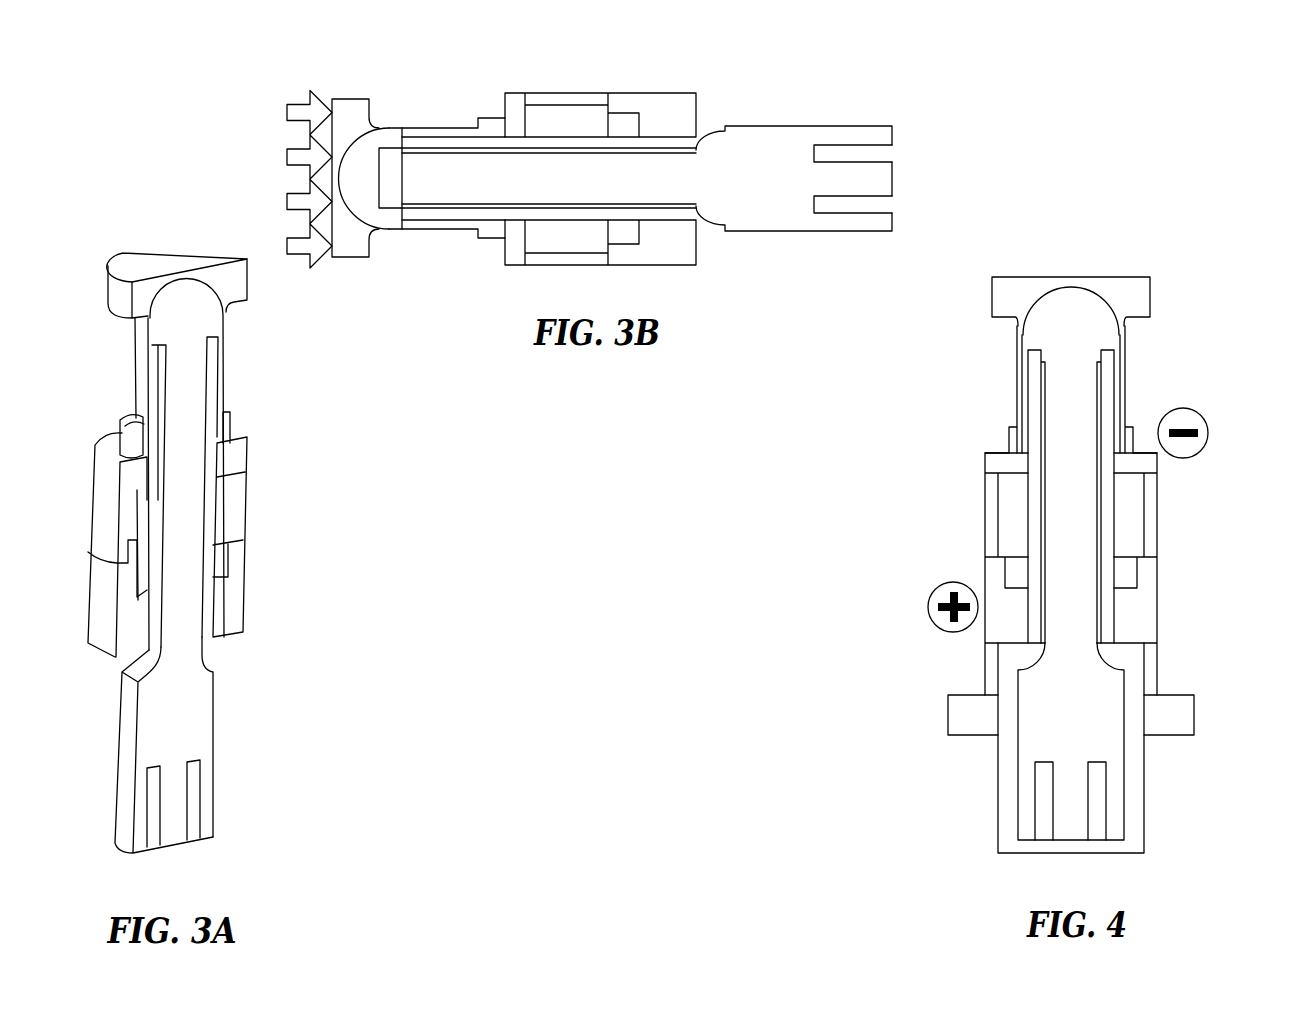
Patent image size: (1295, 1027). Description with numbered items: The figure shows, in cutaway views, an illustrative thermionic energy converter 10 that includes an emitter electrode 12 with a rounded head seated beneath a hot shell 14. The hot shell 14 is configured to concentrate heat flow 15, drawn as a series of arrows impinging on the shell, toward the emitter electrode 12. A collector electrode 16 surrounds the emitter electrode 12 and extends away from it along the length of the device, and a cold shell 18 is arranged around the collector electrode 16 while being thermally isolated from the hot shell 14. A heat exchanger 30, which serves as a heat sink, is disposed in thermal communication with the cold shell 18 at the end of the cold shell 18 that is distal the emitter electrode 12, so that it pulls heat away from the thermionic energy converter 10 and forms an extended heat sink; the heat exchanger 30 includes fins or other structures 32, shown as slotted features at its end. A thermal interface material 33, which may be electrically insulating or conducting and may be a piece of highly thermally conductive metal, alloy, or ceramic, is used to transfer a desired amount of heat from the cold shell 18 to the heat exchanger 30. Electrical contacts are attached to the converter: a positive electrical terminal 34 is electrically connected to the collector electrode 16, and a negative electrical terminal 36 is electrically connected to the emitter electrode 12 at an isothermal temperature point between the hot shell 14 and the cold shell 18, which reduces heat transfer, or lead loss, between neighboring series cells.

In FIG. 3B, the thermionic energy converter 10 is at (612, 58).
In FIG. 3A, the thermionic energy converter 10 is at (171, 225).
In FIG. 4, the thermionic energy converter 10 is at (1175, 225).
In FIG. 3B, the emitter electrode 12 is at (360, 125).
In FIG. 3A, the emitter electrode 12 is at (148, 298).
In FIG. 4, the emitter electrode 12 is at (1005, 293).
In FIG. 3B, the hot shell 14 is at (349, 86).
In FIG. 3A, the hot shell 14 is at (119, 249).
In FIG. 4, the hot shell 14 is at (1036, 262).
In FIG. 3B, the heat flow 15 is at (288, 113).
In FIG. 3B, the collector electrode 16 is at (448, 175).
In FIG. 3A, the collector electrode 16 is at (195, 325).
In FIG. 4, the collector electrode 16 is at (1082, 340).
In FIG. 3B, the cold shell 18 is at (664, 132).
In FIG. 3A, the cold shell 18 is at (216, 602).
In FIG. 4, the cold shell 18 is at (1136, 611).
In FIG. 3B, the heat exchanger 30 is at (757, 208).
In FIG. 3A, the heat exchanger 30 is at (158, 713).
In FIG. 4, the heat exchanger 30 is at (1071, 741).
In FIG. 3B, the fins 32 is at (892, 137).
In FIG. 3A, the fins 32 is at (207, 838).
In FIG. 4, the thermal interface material 33 is at (1008, 821).
In FIG. 4, the positive electrical terminal 34 is at (908, 612).
In FIG. 4, the negative electrical terminal 36 is at (1224, 428).